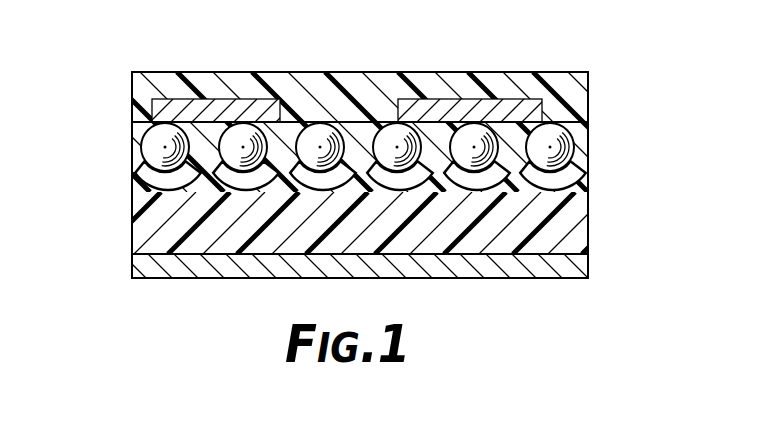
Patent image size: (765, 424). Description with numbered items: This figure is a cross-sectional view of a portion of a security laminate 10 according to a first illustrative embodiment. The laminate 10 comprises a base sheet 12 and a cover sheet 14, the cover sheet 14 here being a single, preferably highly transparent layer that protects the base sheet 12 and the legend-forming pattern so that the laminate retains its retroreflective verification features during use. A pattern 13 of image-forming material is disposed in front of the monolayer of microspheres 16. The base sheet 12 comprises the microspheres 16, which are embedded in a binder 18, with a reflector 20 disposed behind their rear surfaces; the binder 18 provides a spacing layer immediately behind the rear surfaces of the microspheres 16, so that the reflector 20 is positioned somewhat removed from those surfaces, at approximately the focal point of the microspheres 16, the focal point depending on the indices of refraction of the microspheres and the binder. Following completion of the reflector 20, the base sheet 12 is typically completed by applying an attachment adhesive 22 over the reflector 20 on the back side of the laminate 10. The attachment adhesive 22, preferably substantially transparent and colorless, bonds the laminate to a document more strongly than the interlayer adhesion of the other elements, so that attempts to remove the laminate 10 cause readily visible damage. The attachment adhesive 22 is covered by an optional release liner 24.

The security laminate 10 is at (181, 66).
The base sheet 12 is at (625, 253).
The pattern 13 is at (425, 99).
The cover sheet 14 is at (625, 73).
The microspheres 16 is at (152, 152).
The binder 18 is at (133, 125).
The reflector 20 is at (140, 184).
The attachment adhesive 22 is at (140, 232).
The release liner 24 is at (153, 267).